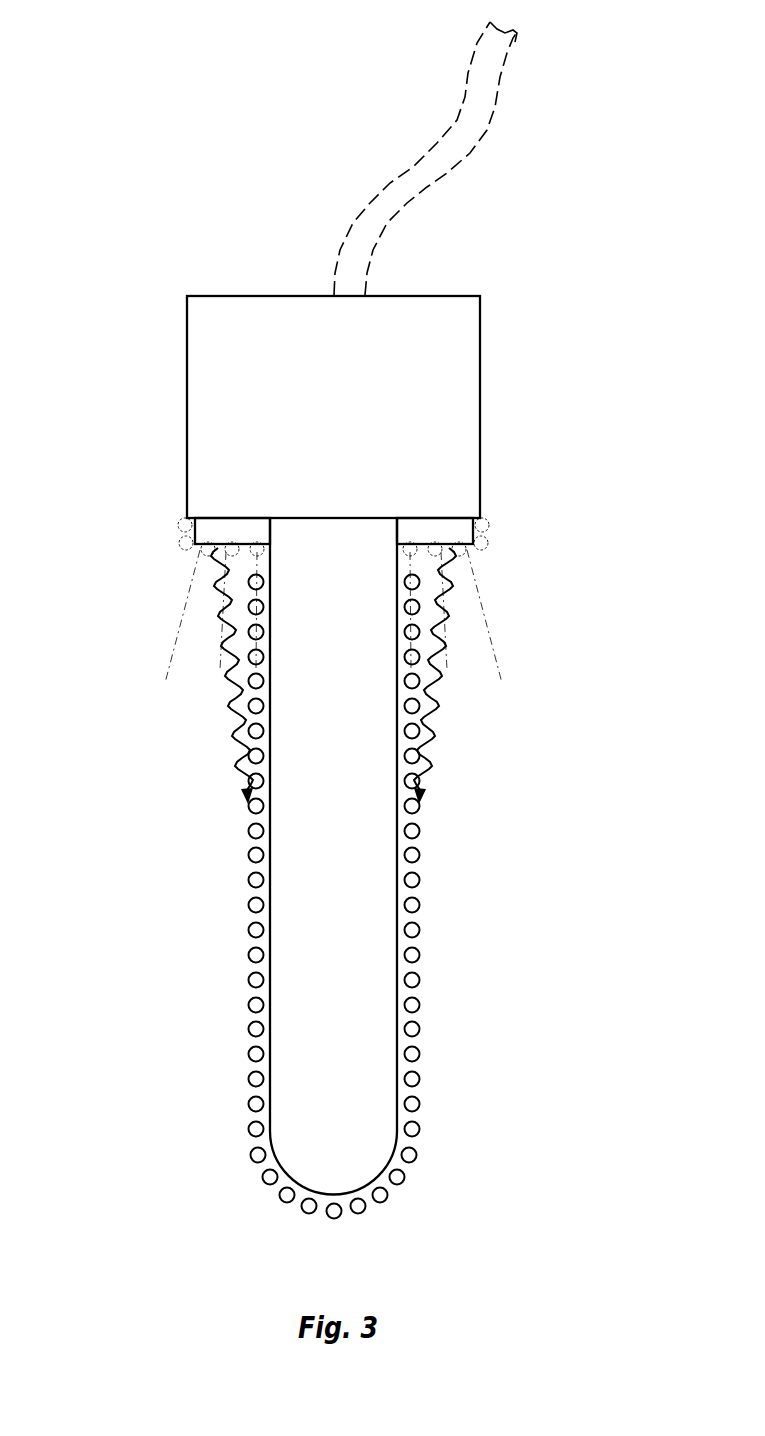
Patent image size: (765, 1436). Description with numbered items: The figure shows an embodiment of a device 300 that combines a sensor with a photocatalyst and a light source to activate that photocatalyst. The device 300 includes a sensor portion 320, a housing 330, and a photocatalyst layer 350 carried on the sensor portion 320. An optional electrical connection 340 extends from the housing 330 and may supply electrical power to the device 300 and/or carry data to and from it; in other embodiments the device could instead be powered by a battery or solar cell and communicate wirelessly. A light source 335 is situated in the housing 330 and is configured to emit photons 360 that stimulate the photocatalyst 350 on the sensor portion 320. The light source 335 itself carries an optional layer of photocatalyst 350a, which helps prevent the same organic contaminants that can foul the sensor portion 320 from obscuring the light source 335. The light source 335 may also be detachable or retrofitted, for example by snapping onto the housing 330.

The device 300 is at (122, 168).
The sensor portion 320 is at (368, 870).
The housing 330 is at (465, 325).
The light source 335 is at (474, 531).
The electrical connection 340 is at (483, 126).
The photocatalyst layer 350 is at (420, 980).
The layer of photocatalyst 350a is at (180, 543).
The photons 360 is at (228, 727).